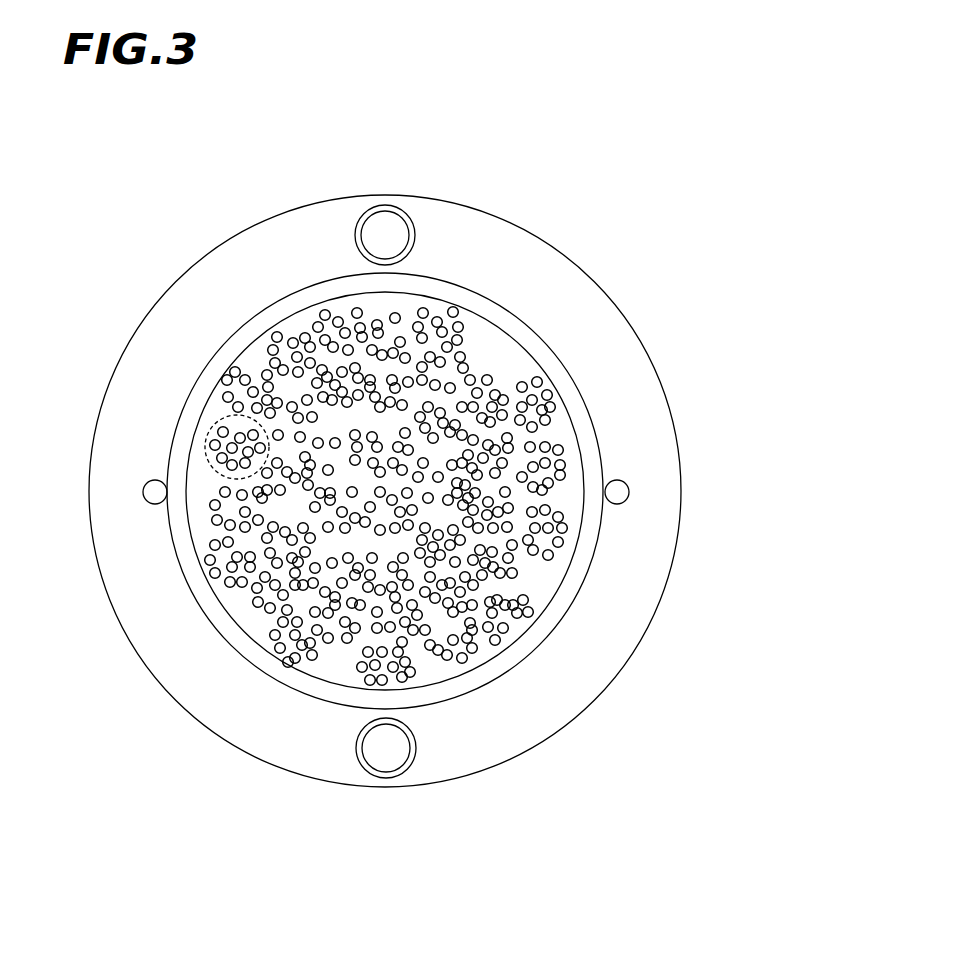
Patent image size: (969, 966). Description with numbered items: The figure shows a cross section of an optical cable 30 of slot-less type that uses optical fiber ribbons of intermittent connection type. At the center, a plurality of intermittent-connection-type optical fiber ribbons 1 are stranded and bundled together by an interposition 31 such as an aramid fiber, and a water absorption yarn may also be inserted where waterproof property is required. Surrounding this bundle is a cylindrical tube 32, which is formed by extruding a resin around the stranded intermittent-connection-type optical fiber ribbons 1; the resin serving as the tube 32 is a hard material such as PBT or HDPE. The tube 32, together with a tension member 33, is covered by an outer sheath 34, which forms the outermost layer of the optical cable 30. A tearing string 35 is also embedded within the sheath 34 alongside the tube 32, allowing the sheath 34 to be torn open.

The intermittent-connection-type optical fiber ribbon 1 is at (208, 418).
The optical cable 30 is at (697, 347).
The interposition 31 is at (493, 352).
The tube 32 is at (568, 595).
The tension member 33 is at (388, 227).
The sheath 34 is at (632, 418).
The tearing string 35 is at (622, 488).